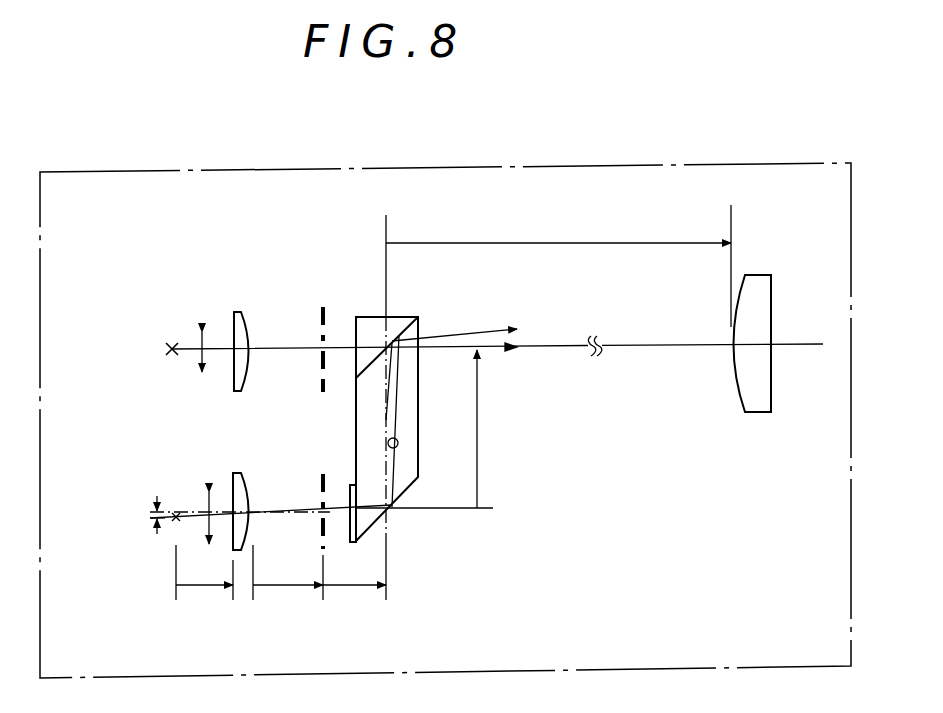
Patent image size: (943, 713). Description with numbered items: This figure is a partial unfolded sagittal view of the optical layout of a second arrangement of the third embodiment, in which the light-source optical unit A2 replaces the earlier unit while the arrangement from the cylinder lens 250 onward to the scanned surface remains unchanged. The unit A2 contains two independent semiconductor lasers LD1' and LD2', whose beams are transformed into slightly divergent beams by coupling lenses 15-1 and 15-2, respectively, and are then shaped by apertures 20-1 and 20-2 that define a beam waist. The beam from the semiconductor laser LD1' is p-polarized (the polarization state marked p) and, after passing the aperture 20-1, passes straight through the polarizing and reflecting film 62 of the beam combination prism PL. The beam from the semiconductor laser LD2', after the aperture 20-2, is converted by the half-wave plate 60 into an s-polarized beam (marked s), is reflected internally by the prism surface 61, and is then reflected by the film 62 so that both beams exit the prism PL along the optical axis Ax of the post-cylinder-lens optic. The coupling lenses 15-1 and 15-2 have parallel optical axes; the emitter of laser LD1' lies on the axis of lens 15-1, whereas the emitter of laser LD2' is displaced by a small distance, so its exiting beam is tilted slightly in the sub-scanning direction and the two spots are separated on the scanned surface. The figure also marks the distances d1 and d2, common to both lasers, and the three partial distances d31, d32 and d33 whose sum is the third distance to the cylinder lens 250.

The light-source optical unit A2 is at (420, 168).
The optical axis Ax is at (789, 346).
The semiconductor laser LD1' is at (137, 320).
The semiconductor laser LD2' is at (200, 547).
The p-polarization p is at (204, 424).
The coupling lens 15-1 is at (242, 312).
The coupling lens 15-2 is at (238, 478).
The aperture 20-1 is at (319, 312).
The aperture 20-2 is at (318, 482).
The beam combination prism PL is at (366, 327).
The polarizing and reflecting film 62 is at (399, 322).
The prism surface 61 is at (406, 504).
The half-wave plate 60 is at (352, 488).
The s-polarization s is at (404, 440).
The distance d32 is at (477, 430).
The distance d33 is at (541, 242).
The cylinder lens 250 is at (756, 280).
The distance d1 is at (200, 586).
The distance d2 is at (282, 586).
The distance d31 is at (354, 586).